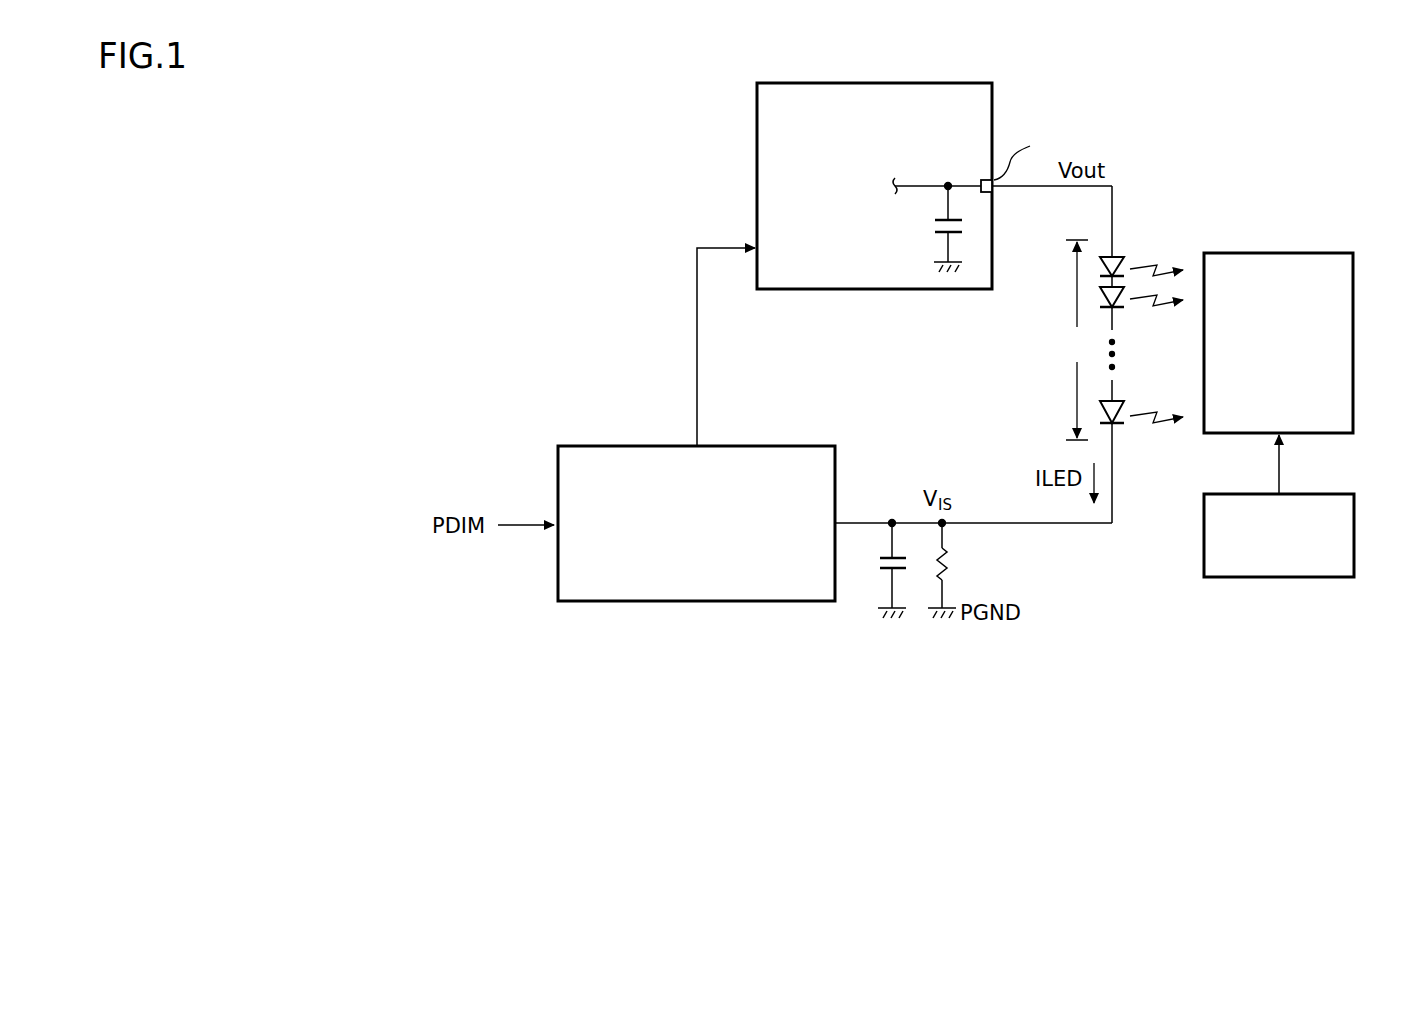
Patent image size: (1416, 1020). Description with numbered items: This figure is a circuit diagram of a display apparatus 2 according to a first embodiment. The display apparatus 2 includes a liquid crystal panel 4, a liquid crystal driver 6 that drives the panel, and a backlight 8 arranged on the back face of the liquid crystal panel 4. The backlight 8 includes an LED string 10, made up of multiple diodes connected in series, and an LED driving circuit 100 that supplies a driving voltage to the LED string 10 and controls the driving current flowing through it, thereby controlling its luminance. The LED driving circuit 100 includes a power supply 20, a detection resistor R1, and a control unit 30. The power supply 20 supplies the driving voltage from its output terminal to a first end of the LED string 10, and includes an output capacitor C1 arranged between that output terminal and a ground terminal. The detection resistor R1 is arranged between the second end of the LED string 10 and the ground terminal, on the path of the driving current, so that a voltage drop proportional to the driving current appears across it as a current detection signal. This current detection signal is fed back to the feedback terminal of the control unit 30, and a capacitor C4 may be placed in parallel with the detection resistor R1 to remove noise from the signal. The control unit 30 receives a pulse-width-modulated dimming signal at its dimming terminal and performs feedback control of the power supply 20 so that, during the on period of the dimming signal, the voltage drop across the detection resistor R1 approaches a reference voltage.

The display apparatus 2 is at (930, 885).
The liquid crystal panel 4 is at (1357, 326).
The liquid crystal driver 6 is at (1357, 530).
The backlight 8 is at (538, 747).
The LED string 10 is at (1055, 240).
The power supply 20 is at (870, 264).
The control unit 30 is at (697, 601).
The LED driving circuit 100 is at (538, 677).
The output capacitor C1 is at (933, 224).
The capacitor C4 is at (877, 570).
The detection resistor R1 is at (955, 570).